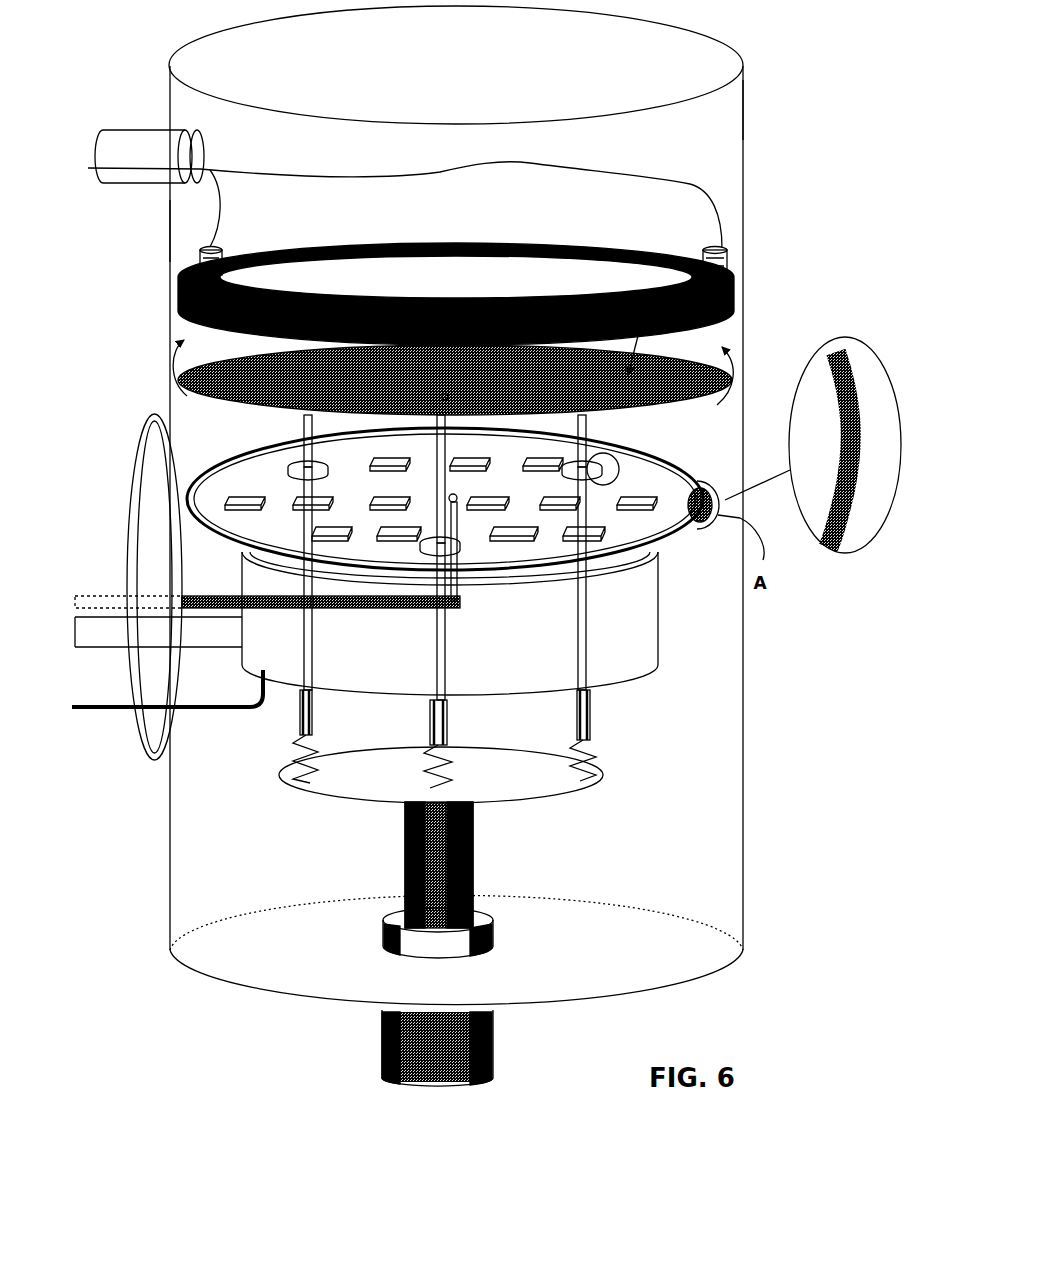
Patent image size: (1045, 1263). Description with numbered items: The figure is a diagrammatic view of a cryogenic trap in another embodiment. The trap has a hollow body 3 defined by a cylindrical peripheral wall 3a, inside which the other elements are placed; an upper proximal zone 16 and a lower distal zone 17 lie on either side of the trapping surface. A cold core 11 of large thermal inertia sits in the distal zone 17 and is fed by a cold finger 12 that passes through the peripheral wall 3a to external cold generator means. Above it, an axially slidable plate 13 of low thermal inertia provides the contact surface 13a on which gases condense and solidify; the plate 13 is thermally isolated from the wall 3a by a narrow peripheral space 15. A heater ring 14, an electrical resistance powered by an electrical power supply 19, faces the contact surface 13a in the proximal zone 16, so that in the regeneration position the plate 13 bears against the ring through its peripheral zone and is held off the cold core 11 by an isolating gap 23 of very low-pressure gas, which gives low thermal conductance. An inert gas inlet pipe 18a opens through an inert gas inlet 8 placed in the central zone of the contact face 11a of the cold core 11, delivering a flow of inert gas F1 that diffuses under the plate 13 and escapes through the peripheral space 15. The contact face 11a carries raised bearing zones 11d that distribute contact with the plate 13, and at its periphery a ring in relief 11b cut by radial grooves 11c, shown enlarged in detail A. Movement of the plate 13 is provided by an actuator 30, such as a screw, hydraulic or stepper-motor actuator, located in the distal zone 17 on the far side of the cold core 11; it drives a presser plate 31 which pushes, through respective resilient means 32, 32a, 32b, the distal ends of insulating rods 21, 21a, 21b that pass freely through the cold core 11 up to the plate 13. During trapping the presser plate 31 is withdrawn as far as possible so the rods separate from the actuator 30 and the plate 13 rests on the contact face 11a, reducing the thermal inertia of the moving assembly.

The hollow body 3 is at (166, 63).
The peripheral wall 3a is at (170, 232).
The proximal zone 16 is at (690, 150).
The distal zone 17 is at (305, 866).
The electrical power supply 19 is at (136, 156).
The plate 13 is at (532, 380).
The contact surface 13a is at (735, 308).
The heater ring 14 is at (178, 290).
The peripheral space 15 is at (178, 338).
The flow of inert gas F1 is at (178, 393).
The isolating gap 23 is at (217, 414).
The cold core 11 is at (630, 617).
The contact face 11a is at (653, 467).
The ring in relief 11b is at (683, 535).
The radial grooves 11c is at (848, 357).
The raised bearing zones 11d is at (243, 497).
The inert gas inlet 8 is at (460, 495).
The inert gas inlet pipe 18a is at (103, 603).
The cold finger 12 is at (103, 635).
The insulating rod 21 is at (443, 725).
The insulating rod 21a is at (587, 717).
The insulating rod 21b is at (300, 723).
The resilient means 32 is at (490, 762).
The resilient means 32a is at (588, 752).
The resilient means 32b is at (287, 753).
The presser plate 31 is at (477, 790).
The actuator 30 is at (382, 1036).